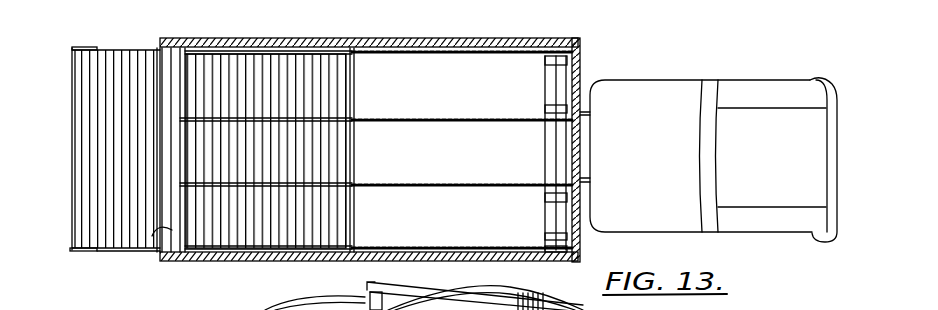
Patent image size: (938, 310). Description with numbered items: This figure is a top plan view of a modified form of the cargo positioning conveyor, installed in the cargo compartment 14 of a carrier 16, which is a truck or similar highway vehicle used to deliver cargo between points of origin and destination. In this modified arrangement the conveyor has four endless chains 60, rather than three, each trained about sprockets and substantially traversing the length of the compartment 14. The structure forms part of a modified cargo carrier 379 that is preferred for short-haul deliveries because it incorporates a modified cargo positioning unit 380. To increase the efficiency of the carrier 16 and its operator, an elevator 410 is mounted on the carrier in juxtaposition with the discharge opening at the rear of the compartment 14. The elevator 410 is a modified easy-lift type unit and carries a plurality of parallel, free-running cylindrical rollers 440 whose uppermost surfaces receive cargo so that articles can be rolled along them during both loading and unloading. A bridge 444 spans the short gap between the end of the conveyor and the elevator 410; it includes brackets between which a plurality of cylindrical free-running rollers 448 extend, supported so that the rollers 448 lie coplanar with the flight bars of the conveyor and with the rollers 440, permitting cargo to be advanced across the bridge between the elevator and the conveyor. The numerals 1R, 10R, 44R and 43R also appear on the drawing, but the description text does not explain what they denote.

The cargo compartment 14 is at (510, 75).
The carrier 16 is at (705, 74).
The endless chain 60 is at (475, 248).
The modified cargo positioning unit 380 is at (249, 42).
The bottom rail 1R is at (250, 258).
The partition 10R is at (361, 85).
The bridge 444 is at (179, 40).
The elevator 410 is at (125, 45).
The cylindrical rollers 440 is at (153, 100).
The door frame side 44R is at (73, 138).
The door bottom rail 43R is at (133, 252).
The bridge rollers 448 is at (152, 234).
The modified cargo carrier 379 is at (642, 78).